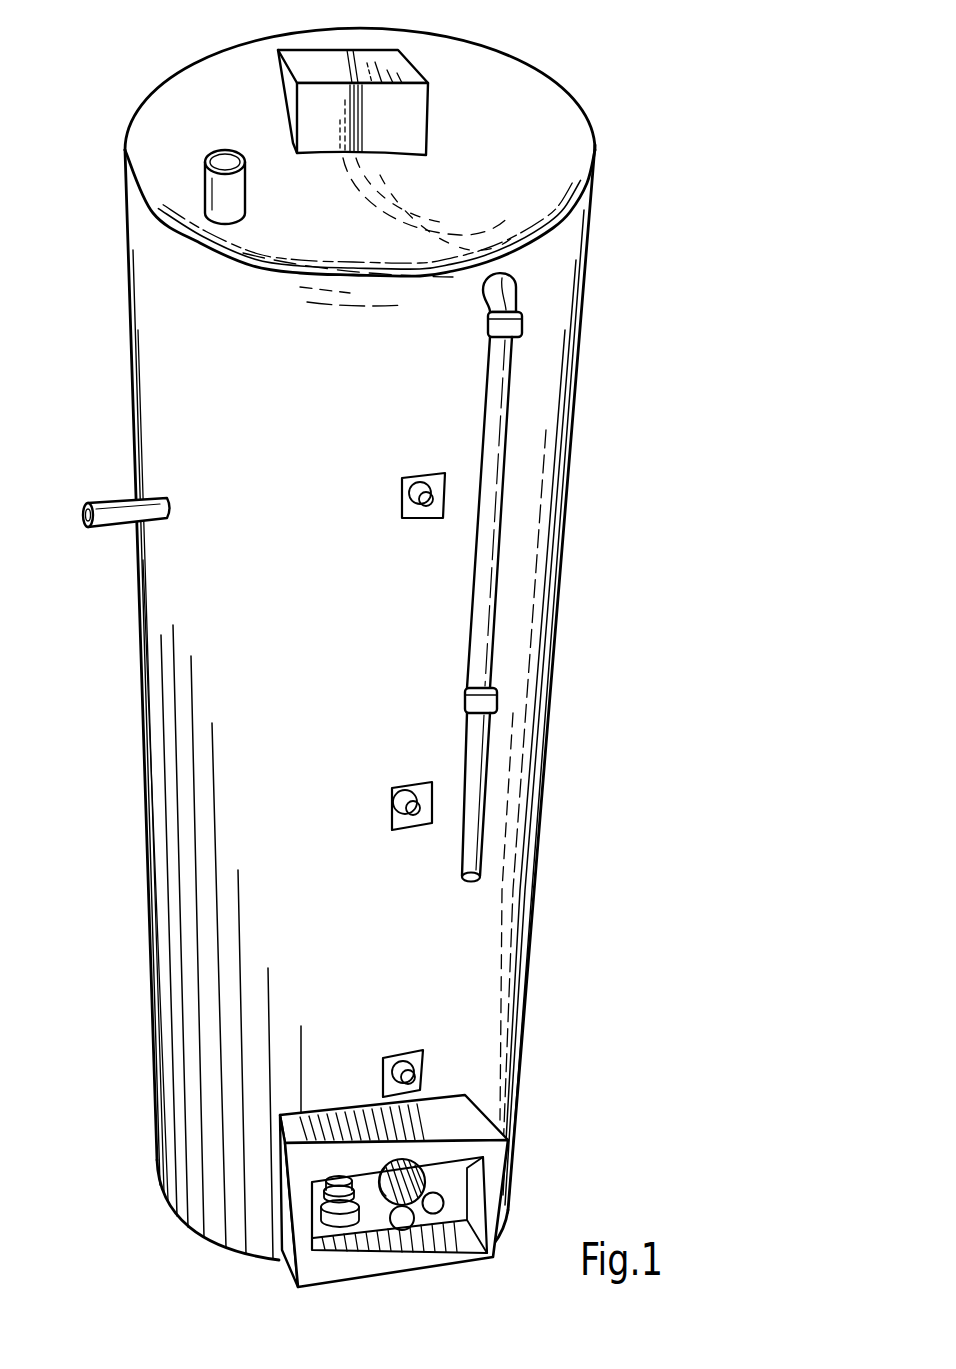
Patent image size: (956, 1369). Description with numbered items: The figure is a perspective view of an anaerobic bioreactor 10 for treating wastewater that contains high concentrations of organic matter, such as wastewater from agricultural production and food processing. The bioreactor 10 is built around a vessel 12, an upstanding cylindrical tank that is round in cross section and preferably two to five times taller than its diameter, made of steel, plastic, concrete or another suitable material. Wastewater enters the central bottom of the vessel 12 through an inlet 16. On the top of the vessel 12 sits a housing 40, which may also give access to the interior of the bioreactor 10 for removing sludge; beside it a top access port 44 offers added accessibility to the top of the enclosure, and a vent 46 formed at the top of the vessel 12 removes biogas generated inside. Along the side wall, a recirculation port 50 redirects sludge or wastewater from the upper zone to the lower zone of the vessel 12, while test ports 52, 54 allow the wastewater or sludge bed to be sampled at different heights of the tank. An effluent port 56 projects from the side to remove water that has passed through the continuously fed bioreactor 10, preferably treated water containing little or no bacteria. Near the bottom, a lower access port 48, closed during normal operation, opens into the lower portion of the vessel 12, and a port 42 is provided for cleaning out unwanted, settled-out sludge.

The anaerobic reactor 10 is at (574, 64).
The vessel 12 is at (247, 412).
The inlet 16 is at (437, 1212).
The housing 40 is at (339, 122).
The port 42 is at (403, 1230).
The top access port 44 is at (225, 198).
The vent 46 is at (516, 279).
The lower access port 48 is at (413, 1182).
The recirculation port 50 is at (421, 519).
The test port 52 is at (392, 807).
The test port 54 is at (390, 1058).
The effluent port 56 is at (112, 507).